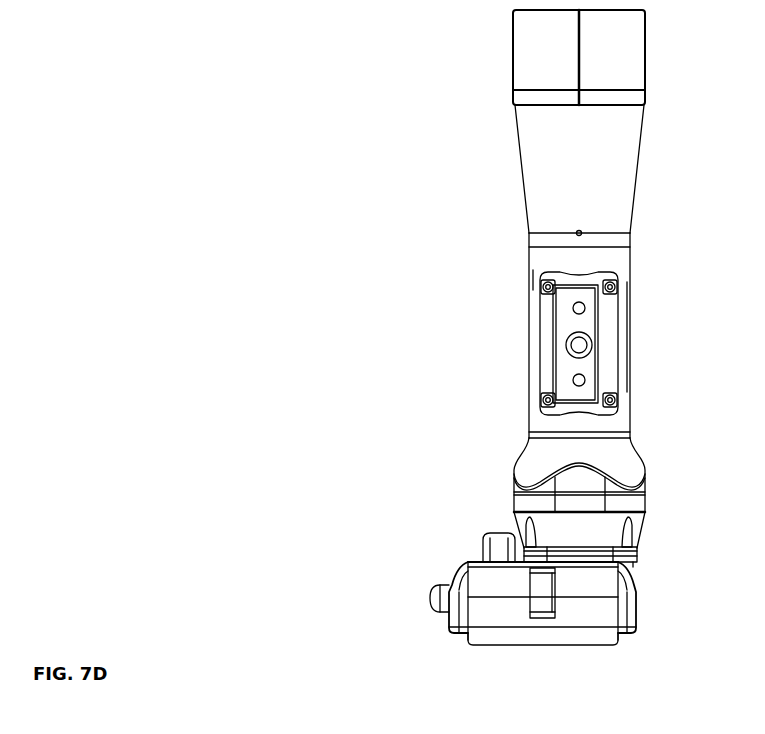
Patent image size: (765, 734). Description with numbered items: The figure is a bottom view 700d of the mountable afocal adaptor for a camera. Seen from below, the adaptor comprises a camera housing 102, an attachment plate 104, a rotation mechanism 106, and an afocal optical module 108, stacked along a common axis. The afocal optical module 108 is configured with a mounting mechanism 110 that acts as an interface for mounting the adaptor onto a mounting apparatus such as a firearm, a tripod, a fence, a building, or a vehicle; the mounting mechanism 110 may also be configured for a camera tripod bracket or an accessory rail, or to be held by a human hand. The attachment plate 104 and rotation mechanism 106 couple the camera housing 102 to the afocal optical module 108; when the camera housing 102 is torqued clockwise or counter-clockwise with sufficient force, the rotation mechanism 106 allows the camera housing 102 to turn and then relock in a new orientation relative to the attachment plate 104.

The bottom view 700d is at (100, 572).
The camera housing 102 is at (465, 571).
The attachment plate 104 is at (632, 551).
The rotation mechanism 106 is at (530, 503).
The afocal optical module 108 is at (540, 133).
The mounting mechanism 110 is at (545, 344).